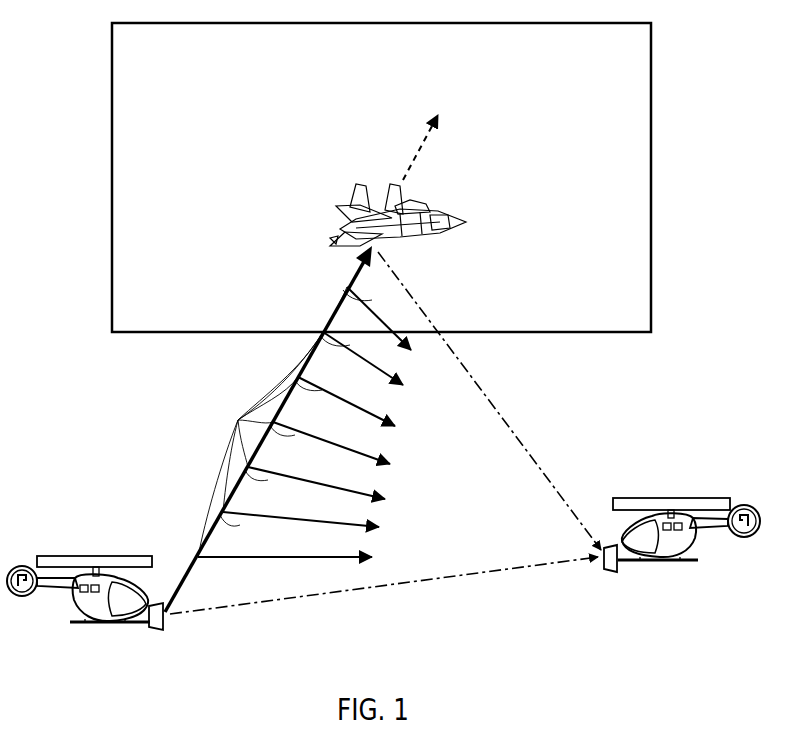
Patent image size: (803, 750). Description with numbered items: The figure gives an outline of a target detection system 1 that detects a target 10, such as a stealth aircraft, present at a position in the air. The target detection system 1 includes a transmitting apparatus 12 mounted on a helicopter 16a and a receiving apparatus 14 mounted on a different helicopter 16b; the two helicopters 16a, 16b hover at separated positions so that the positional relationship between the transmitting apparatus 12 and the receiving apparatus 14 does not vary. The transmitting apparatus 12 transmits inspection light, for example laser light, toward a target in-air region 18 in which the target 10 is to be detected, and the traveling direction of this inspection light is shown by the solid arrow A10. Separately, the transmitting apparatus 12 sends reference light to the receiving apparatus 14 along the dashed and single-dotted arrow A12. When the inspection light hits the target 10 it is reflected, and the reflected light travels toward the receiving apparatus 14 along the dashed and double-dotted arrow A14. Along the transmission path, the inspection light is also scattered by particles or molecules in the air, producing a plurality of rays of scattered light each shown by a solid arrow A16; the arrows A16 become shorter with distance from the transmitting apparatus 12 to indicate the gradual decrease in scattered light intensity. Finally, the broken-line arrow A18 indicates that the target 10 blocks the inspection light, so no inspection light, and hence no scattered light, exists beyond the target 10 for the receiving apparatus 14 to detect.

The target detection system 1 is at (750, 282).
The target 10 is at (443, 228).
The transmitting apparatus 12 is at (162, 632).
The receiving apparatus 14 is at (611, 574).
The helicopter 16a is at (55, 598).
The helicopter 16b is at (727, 538).
The target in-air region 18 is at (630, 296).
The solid arrow A10 is at (353, 253).
The arrow of dashed and single-dotted line A12 is at (382, 596).
The arrow of dashed and double-dotted line A14 is at (486, 390).
The solid arrow A16 is at (238, 420).
The arrow of broken line A18 is at (417, 142).